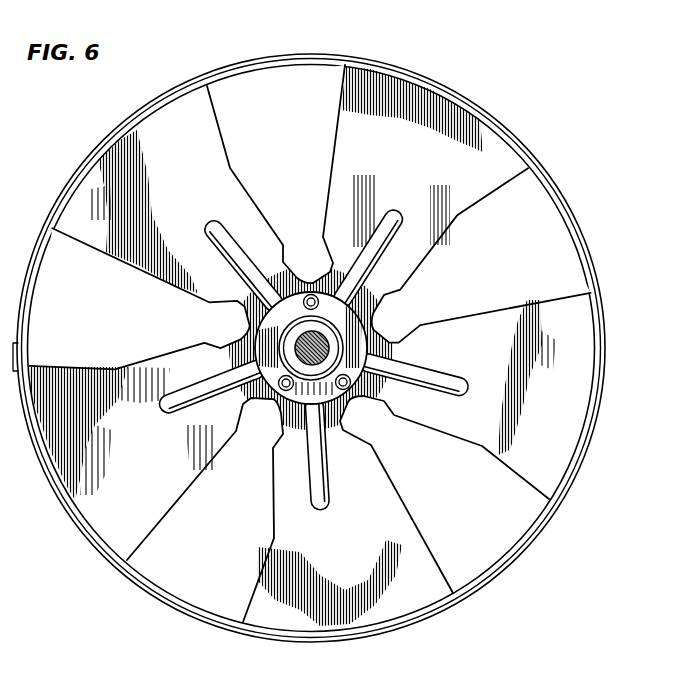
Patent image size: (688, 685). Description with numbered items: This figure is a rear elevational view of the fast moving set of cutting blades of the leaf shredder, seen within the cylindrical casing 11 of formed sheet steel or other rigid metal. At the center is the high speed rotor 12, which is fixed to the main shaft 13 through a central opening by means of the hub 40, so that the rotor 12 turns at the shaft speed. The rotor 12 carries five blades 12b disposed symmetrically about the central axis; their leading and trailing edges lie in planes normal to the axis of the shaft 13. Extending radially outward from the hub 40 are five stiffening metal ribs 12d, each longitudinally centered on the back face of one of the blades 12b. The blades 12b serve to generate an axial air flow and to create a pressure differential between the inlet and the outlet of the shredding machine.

The cylindrical casing 11 is at (145, 585).
The high speed rotor 12 is at (318, 345).
The blades 12b is at (212, 140).
The stiffening metal ribs 12d is at (396, 214).
The shaft 13 is at (296, 348).
The hub 40 is at (366, 312).